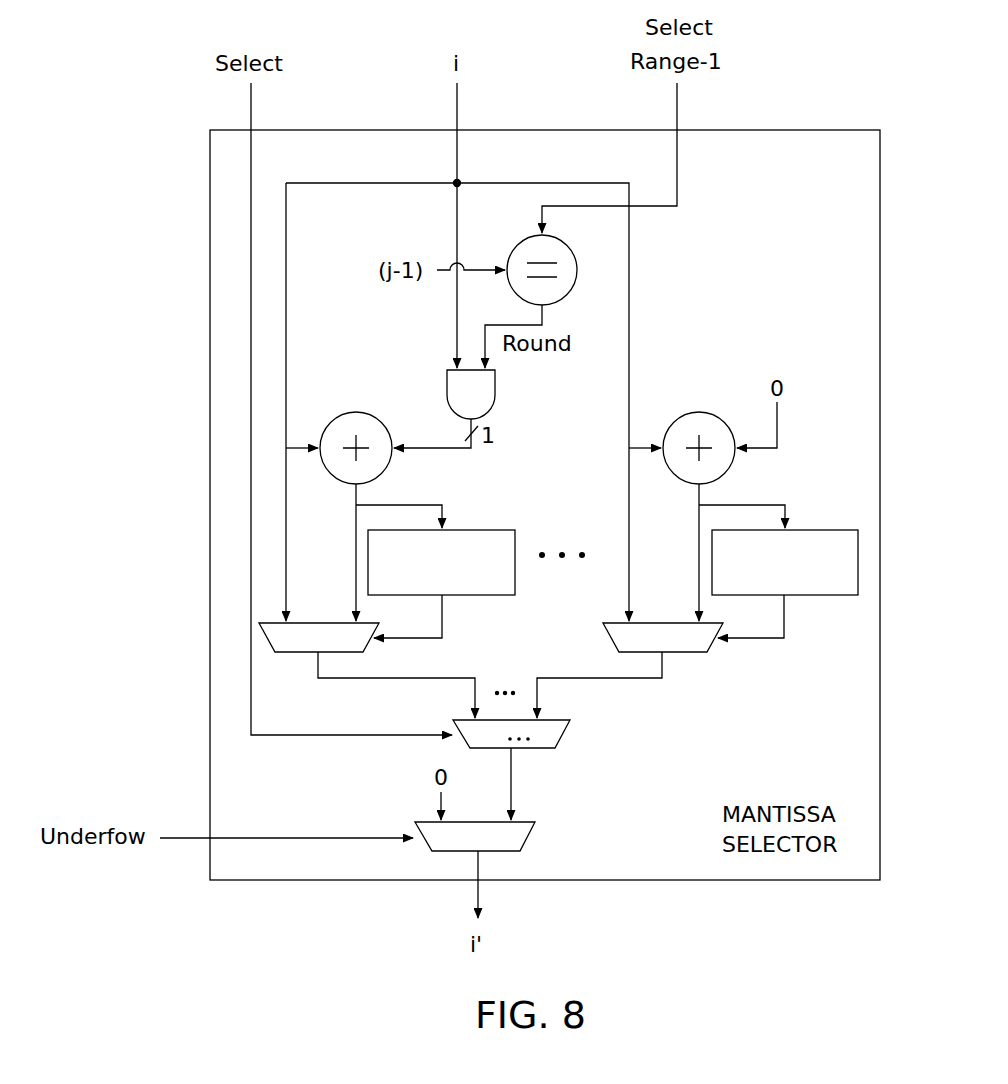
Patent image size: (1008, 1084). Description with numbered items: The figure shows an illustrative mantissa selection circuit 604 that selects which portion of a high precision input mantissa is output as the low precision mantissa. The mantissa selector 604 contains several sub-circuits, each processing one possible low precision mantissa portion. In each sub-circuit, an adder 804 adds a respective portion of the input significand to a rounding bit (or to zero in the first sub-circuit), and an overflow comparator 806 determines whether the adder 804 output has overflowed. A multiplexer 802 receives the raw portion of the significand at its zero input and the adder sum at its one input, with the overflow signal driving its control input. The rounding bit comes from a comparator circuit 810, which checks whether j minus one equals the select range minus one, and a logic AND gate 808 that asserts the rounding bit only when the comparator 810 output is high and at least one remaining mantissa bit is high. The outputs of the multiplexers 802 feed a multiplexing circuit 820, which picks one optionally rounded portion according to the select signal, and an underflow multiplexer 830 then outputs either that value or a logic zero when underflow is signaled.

The mantissa selection circuit 604 is at (210, 190).
The multiplexer 802 is at (298, 652).
The adder 804 is at (358, 412).
The overflow comparator 806 is at (497, 530).
The logic AND gate 808 is at (495, 390).
The comparator circuit 810 is at (577, 270).
The multiplexing circuit 820 is at (565, 735).
The underflow multiplexer 830 is at (533, 836).